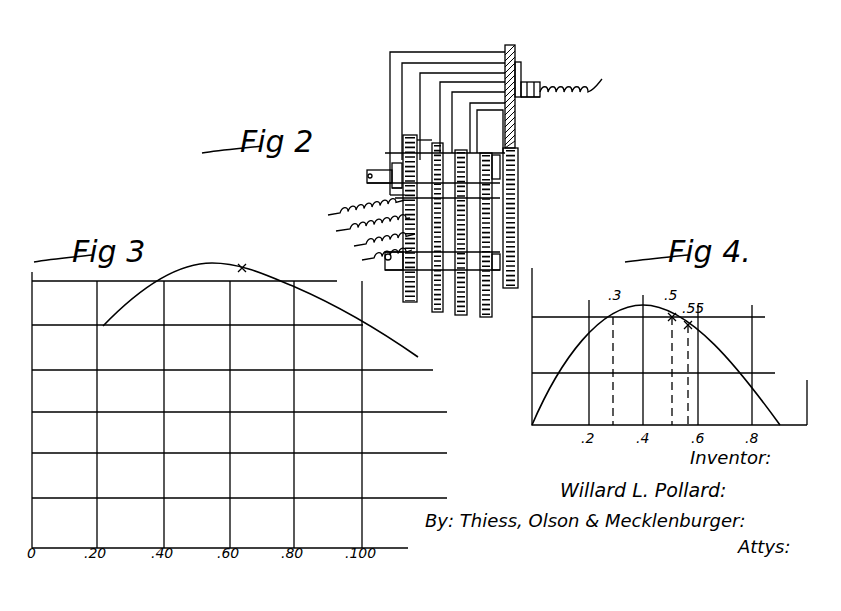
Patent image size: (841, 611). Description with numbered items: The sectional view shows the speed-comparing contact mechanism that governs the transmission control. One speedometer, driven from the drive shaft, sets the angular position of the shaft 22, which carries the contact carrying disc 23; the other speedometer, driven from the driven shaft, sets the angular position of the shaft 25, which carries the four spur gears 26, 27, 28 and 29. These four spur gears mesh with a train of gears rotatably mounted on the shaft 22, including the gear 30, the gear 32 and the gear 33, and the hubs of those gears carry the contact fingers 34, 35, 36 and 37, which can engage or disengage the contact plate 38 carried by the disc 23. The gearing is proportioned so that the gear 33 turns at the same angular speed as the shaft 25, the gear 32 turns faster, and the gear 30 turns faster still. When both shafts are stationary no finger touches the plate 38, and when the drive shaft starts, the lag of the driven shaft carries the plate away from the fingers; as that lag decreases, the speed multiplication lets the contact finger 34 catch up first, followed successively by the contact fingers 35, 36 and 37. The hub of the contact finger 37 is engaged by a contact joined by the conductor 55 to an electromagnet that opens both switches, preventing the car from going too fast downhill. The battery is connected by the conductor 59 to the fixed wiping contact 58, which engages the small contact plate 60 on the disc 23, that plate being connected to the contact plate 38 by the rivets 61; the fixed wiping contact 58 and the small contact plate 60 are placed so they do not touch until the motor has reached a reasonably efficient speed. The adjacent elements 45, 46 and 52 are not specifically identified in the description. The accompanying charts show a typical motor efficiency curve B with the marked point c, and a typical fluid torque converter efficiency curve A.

In FIG. 2, the shaft 22 is at (376, 170).
In FIG. 2, the contact carrying disc 23 is at (512, 192).
In FIG. 2, the shaft 25 is at (388, 262).
In FIG. 2, the spur gear 26 is at (488, 318).
In FIG. 2, the spur gear 27 is at (461, 318).
In FIG. 2, the spur gear 28 is at (437, 313).
In FIG. 2, the spur gear 29 is at (410, 303).
In FIG. 2, the gear 30 is at (488, 153).
In FIG. 2, the gear 32 is at (433, 140).
In FIG. 2, the gear 33 is at (393, 182).
In FIG. 2, the contact finger 34 is at (488, 105).
In FIG. 2, the contact finger 35 is at (467, 82).
In FIG. 2, the contact finger 36 is at (440, 75).
In FIG. 2, the contact finger 37 is at (392, 58).
In FIG. 2, the contact plate 38 is at (515, 53).
In FIG. 2, the spring 45 is at (360, 243).
In FIG. 2, the spring 46 is at (364, 259).
In FIG. 2, the spring 52 is at (338, 231).
In FIG. 2, the conductor 55 is at (328, 214).
In FIG. 2, the fixed wiping contact 58 is at (523, 97).
In FIG. 2, the conductor 59 is at (597, 88).
In FIG. 2, the small contact plate 60 is at (521, 68).
In FIG. 2, the rivets 61 is at (523, 85).
In FIG. 4, the curve A is at (706, 336).
In FIG. 3, the curve B is at (203, 263).
In FIG. 3, the point c is at (163, 279).